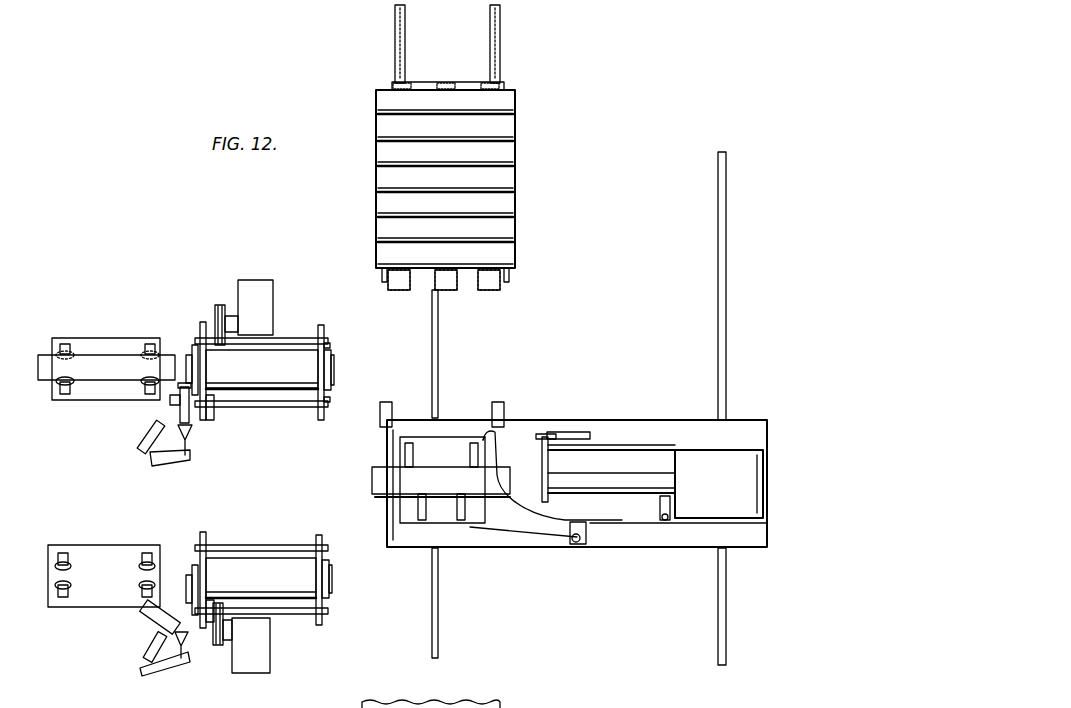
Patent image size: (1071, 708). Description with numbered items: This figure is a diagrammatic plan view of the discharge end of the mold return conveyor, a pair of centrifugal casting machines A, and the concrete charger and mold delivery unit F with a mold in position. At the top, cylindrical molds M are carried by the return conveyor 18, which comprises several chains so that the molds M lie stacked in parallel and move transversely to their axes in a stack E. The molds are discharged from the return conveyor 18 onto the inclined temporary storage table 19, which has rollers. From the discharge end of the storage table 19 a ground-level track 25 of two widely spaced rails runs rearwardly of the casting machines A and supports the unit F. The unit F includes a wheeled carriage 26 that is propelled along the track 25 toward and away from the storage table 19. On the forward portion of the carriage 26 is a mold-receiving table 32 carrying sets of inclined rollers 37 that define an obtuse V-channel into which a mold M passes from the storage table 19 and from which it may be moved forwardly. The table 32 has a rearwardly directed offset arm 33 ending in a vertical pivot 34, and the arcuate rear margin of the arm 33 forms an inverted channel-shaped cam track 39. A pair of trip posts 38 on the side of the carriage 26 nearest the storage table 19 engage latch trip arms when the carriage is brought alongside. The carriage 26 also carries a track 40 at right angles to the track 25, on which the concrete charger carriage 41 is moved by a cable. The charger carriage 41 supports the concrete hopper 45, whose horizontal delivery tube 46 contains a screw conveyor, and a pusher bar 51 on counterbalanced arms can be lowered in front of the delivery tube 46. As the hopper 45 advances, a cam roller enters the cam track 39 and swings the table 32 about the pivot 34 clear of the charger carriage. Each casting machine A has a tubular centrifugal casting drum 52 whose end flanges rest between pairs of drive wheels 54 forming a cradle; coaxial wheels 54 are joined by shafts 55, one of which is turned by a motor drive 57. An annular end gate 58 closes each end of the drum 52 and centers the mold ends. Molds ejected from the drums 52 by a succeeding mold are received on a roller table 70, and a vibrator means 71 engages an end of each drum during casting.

The return conveyor 18 is at (505, 48).
The mold M is at (500, 105).
The stack of mats E is at (530, 212).
The temporary storage table 19 is at (503, 286).
The track 25 is at (440, 338).
The trip posts 38 is at (388, 404).
The concrete charger and mold delivery unit F is at (610, 414).
The track 40 is at (628, 448).
The concrete charger carriage 41 is at (705, 465).
The inclined rollers 37 is at (468, 455).
The cam track 39 is at (512, 492).
The pusher bar 51 is at (549, 470).
The delivery tube 46 is at (612, 482).
The concrete hopper 45 is at (680, 475).
The mold-receiving table 32 is at (489, 520).
The offset arm 33 is at (541, 530).
The vertical pivot 34 is at (576, 544).
The carriage 26 is at (668, 530).
The table 70 is at (95, 346).
The vibrator means 71 is at (168, 418).
The annular end gate 58 is at (188, 358).
The drive wheels 54 is at (203, 334).
The motor drive 57 is at (256, 290).
The shafts 55 is at (280, 338).
The centrifugal casting drum 52 is at (277, 358).
The centrifugal casting machines A is at (240, 418).